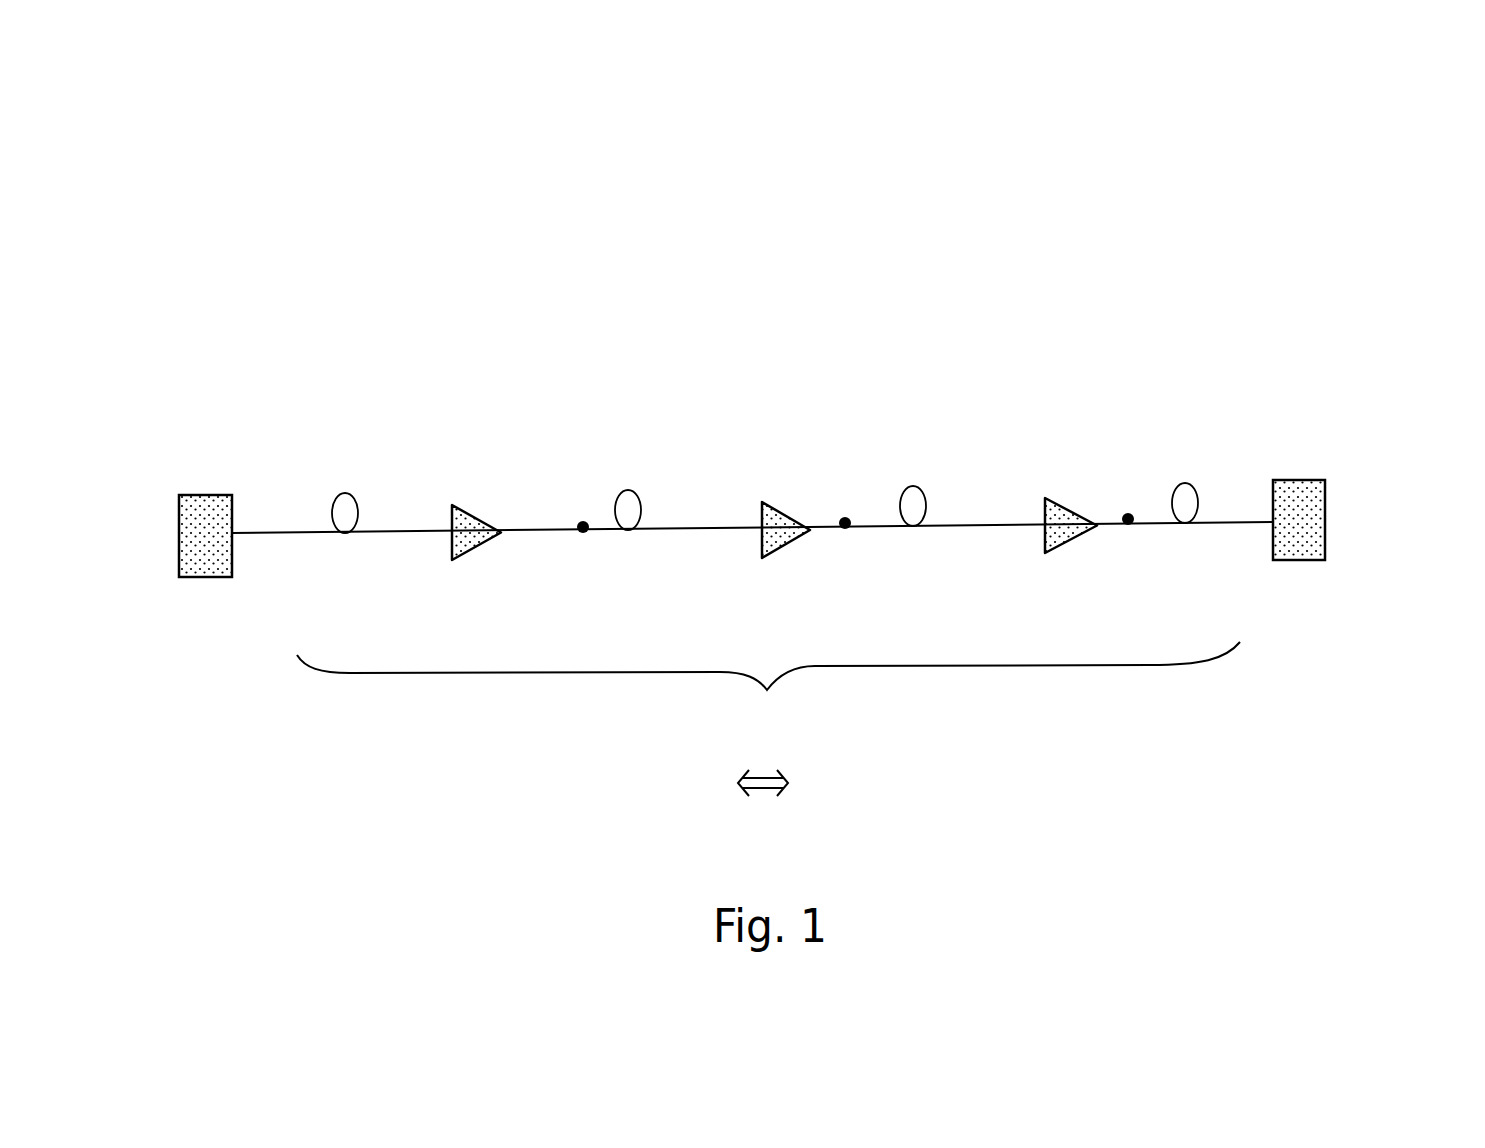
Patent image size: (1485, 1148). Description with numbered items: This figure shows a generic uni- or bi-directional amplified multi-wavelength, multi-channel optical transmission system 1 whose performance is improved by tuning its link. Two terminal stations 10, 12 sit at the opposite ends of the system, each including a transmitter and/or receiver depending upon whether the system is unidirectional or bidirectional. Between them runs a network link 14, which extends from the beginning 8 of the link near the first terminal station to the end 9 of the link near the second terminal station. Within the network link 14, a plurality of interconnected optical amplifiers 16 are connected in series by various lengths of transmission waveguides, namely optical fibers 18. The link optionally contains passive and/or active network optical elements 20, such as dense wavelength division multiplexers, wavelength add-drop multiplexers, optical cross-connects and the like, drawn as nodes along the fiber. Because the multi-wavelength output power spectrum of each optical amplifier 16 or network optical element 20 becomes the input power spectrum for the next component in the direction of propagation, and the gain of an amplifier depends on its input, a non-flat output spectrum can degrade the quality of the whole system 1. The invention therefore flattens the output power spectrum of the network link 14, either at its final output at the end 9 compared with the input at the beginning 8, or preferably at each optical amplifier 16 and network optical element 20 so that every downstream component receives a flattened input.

The optical transmission system 1 is at (349, 270).
The beginning of the link 8 is at (284, 568).
The end of the link 9 is at (1252, 565).
The terminal station 10 is at (238, 490).
The terminal station 12 is at (1338, 482).
The network link 14 is at (768, 692).
The optical amplifier 16 is at (473, 489).
The optical fiber 18 is at (397, 547).
The network optical element 20 is at (580, 499).